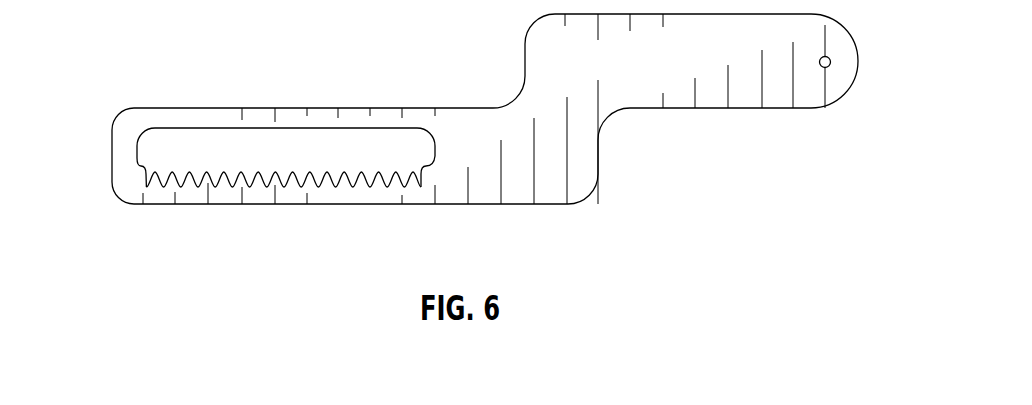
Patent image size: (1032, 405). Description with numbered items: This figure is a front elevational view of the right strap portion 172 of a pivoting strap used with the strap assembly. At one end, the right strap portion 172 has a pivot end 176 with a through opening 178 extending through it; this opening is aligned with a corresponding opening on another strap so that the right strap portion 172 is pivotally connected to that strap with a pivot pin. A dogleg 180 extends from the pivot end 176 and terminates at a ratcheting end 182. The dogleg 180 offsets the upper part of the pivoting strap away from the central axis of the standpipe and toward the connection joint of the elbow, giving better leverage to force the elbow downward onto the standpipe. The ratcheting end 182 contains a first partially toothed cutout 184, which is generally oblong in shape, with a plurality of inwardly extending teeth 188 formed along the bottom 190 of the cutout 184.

The right strap portion 172 is at (110, 157).
The pivot end 176 is at (849, 35).
The through opening 178 is at (832, 63).
The dogleg 180 is at (600, 168).
The ratcheting end 182 is at (550, 205).
The first partially toothed cutout 184 is at (193, 129).
The teeth 188 is at (188, 177).
The bottom of cutout 190 is at (230, 205).